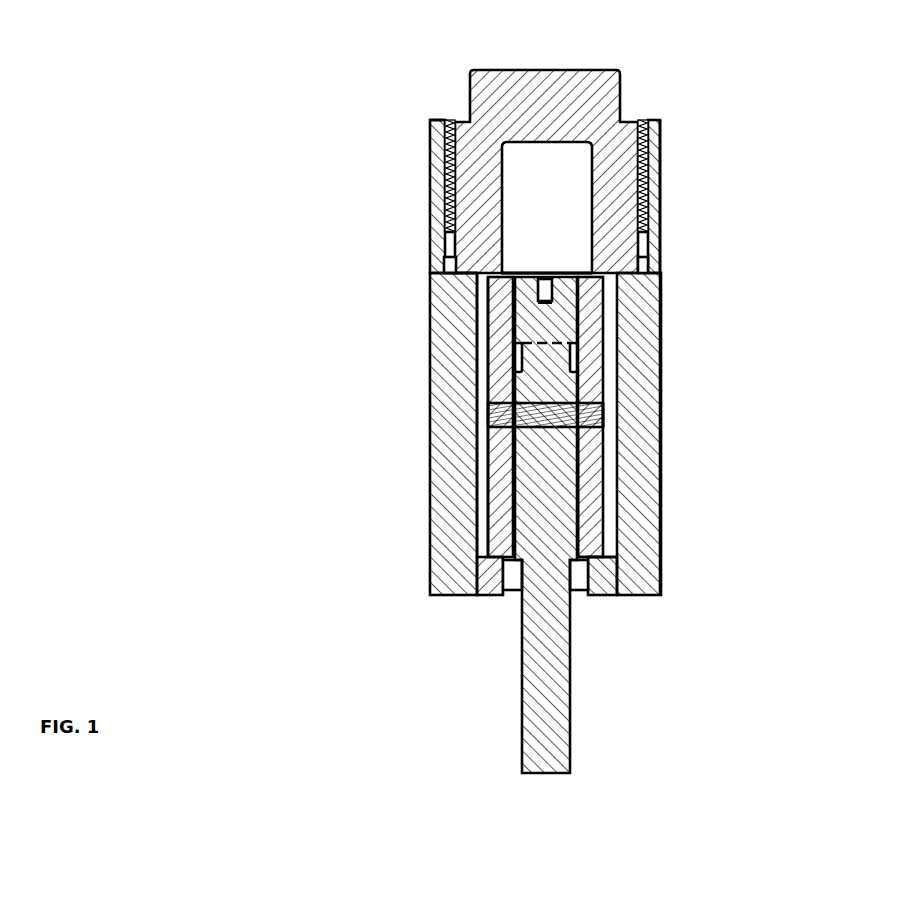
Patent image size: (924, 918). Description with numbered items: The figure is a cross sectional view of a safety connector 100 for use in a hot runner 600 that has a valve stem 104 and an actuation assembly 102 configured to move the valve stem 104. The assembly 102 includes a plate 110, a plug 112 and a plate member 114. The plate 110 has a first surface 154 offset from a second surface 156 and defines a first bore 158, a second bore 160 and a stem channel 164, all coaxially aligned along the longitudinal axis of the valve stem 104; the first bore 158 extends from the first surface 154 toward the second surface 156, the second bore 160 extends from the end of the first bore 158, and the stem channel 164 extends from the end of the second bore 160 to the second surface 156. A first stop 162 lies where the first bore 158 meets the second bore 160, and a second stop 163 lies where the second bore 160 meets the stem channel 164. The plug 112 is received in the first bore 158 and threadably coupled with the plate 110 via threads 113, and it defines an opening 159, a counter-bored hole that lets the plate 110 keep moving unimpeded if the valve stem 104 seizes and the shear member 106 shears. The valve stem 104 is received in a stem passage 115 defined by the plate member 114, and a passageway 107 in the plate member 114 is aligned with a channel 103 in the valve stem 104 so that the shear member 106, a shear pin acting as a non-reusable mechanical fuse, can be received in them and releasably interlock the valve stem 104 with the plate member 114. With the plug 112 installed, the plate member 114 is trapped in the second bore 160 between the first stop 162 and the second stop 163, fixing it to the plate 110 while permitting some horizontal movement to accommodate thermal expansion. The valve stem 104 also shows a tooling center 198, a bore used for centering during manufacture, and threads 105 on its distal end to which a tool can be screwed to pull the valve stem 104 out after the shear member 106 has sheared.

The safety connector 100 is at (807, 437).
The actuation assembly 102 is at (807, 323).
The channel 103 is at (553, 400).
The valve stem 104 is at (570, 723).
The threads 105 is at (513, 310).
The shear member 106 is at (600, 412).
The passageway 107 is at (595, 430).
The plate 110 is at (662, 305).
The plug 112 is at (623, 162).
The threads 113 is at (642, 213).
The plate member 114 is at (605, 355).
The stem passage 115 is at (583, 480).
The first surface 154 is at (438, 120).
The second surface 156 is at (467, 597).
The first bore 158 is at (453, 248).
The opening 159 is at (523, 178).
The second bore 160 is at (477, 510).
The first stop 162 is at (463, 280).
The second stop 163 is at (517, 577).
The stem channel 164 is at (453, 597).
The tooling center 198 is at (560, 273).
The hot runner 600 is at (524, 26).